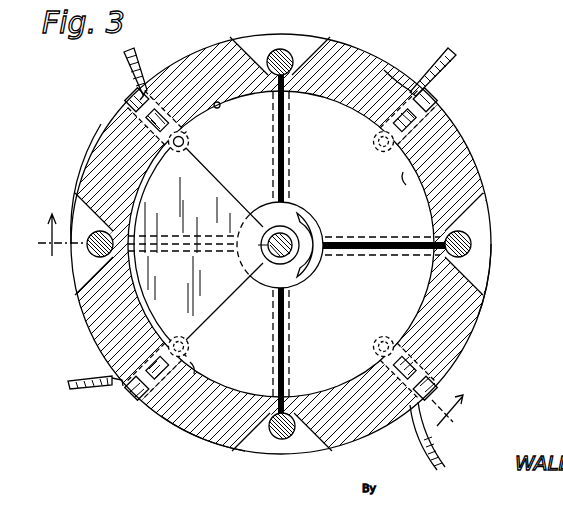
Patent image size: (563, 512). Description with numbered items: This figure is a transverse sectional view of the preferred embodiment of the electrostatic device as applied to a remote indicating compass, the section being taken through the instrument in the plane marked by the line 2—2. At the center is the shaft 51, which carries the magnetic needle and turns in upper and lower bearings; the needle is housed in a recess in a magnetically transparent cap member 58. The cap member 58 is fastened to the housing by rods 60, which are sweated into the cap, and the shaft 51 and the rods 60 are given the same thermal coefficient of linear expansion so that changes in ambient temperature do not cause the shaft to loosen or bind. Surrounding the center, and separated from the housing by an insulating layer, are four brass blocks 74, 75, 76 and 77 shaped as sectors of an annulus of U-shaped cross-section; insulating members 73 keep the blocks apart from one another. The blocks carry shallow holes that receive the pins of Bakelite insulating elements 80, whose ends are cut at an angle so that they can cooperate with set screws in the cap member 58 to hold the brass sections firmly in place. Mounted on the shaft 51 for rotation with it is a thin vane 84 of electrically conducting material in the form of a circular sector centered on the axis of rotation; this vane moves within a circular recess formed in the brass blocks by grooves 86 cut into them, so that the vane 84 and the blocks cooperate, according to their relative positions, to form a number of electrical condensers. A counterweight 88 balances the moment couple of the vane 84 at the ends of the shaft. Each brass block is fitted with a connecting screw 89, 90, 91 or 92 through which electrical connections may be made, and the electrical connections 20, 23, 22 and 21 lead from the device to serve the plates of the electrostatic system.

The line 2- 2 is at (245, 320).
The electrical connection 20 is at (438, 468).
The electrical connection 21 is at (454, 52).
The electrical connection 22 is at (128, 60).
The electrical connection 23 is at (84, 385).
The shaft 51 is at (291, 259).
The cap member 58 is at (488, 208).
The rods 60 is at (282, 49).
The insulating members 73 is at (286, 72).
The brass block 74 is at (100, 147).
The brass block 75 is at (386, 69).
The brass block 76 is at (463, 346).
The brass block 77 is at (198, 436).
The insulating elements 80 is at (190, 138).
The vane 84 is at (163, 304).
The grooves 86 is at (212, 97).
The counterweight 88 is at (317, 223).
The connecting screw 89 is at (131, 99).
The connecting screw 90 is at (428, 112).
The connecting screw 91 is at (440, 389).
The connecting screw 92 is at (133, 398).